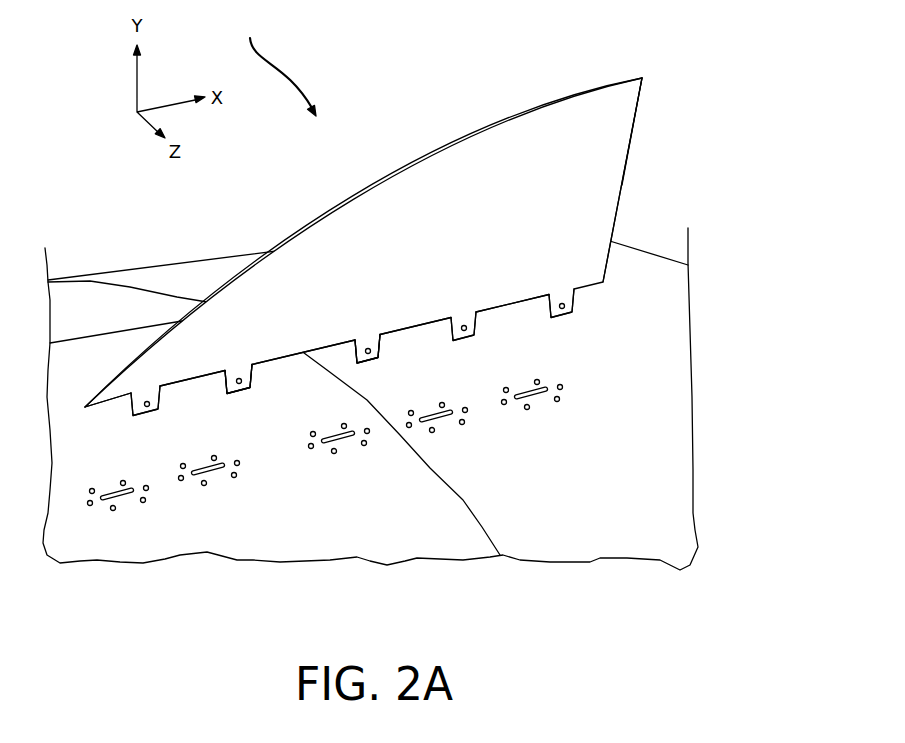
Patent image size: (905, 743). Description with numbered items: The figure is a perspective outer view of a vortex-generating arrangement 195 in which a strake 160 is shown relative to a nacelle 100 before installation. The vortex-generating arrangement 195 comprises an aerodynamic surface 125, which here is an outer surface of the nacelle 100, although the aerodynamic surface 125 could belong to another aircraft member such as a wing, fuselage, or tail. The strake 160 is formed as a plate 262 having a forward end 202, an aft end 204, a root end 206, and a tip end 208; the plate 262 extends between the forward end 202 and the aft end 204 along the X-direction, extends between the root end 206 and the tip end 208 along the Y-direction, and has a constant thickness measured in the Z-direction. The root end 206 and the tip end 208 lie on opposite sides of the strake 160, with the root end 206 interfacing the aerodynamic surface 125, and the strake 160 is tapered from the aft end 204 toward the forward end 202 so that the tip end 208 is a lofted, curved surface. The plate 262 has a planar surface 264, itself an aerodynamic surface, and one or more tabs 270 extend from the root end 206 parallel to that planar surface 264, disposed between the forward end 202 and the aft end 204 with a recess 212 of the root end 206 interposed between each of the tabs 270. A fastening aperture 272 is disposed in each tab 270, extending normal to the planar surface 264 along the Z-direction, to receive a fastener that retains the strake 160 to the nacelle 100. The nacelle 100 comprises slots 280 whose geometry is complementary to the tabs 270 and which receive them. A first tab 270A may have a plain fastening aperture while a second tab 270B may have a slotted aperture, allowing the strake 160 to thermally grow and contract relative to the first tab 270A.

The nacelle 100 is at (177, 262).
The aerodynamic surface 125 is at (568, 533).
The strake 160 is at (457, 137).
The vortex-generating arrangement 195 is at (273, 62).
The forward end 202 is at (82, 408).
The aft end 204 is at (633, 143).
The root end 206 is at (403, 330).
The tip end 208 is at (398, 168).
The recess 212 is at (528, 312).
The plate 262 is at (593, 168).
The planar surface 264 is at (428, 251).
The tabs 270 is at (470, 339).
The first tab 270A is at (350, 362).
The second tab 270B is at (220, 395).
The fastening aperture 272 is at (462, 325).
The slots 280 is at (340, 443).